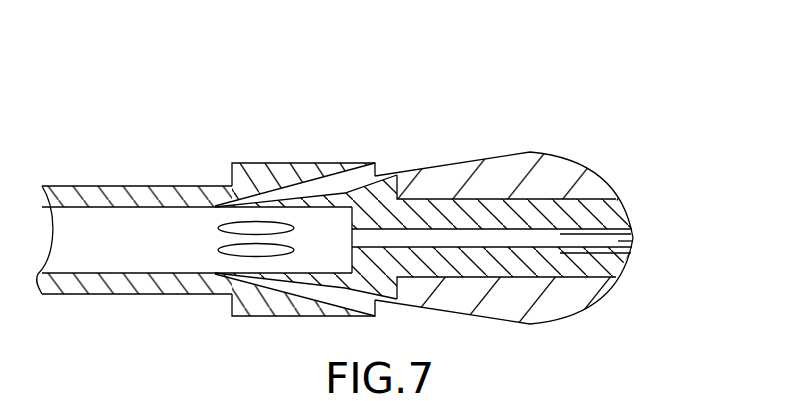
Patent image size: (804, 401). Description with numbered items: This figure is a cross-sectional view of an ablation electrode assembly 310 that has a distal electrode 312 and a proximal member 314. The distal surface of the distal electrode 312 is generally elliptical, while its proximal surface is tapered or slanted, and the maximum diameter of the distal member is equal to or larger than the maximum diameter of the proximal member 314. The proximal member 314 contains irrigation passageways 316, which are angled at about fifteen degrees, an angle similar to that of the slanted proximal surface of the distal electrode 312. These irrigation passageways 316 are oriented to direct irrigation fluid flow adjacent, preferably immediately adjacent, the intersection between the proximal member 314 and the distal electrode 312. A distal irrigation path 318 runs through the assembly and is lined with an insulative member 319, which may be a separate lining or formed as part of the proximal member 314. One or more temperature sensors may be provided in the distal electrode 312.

The ablation electrode assembly 310 is at (621, 100).
The distal electrode 312 is at (578, 182).
The proximal member 314 is at (262, 172).
The irrigation passageways 316 is at (378, 172).
The distal irrigation path 318 is at (634, 238).
The insulative member 319 is at (633, 253).